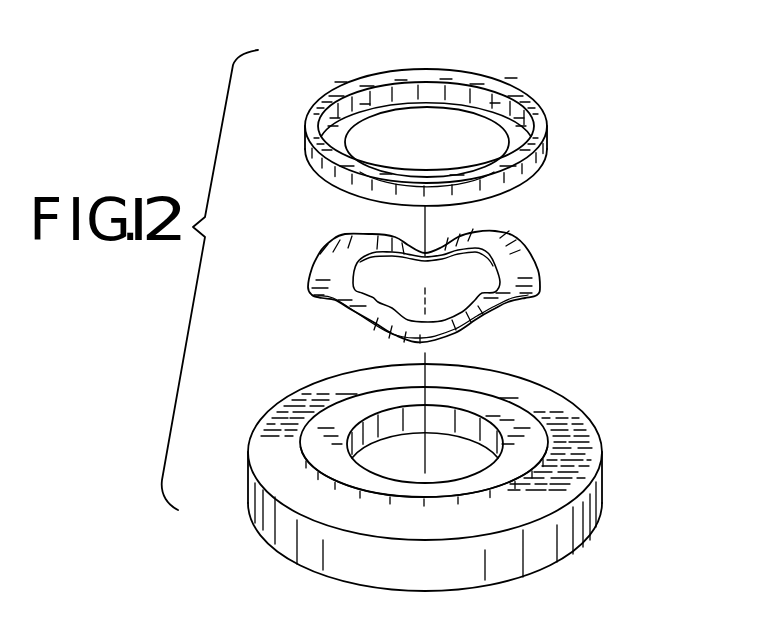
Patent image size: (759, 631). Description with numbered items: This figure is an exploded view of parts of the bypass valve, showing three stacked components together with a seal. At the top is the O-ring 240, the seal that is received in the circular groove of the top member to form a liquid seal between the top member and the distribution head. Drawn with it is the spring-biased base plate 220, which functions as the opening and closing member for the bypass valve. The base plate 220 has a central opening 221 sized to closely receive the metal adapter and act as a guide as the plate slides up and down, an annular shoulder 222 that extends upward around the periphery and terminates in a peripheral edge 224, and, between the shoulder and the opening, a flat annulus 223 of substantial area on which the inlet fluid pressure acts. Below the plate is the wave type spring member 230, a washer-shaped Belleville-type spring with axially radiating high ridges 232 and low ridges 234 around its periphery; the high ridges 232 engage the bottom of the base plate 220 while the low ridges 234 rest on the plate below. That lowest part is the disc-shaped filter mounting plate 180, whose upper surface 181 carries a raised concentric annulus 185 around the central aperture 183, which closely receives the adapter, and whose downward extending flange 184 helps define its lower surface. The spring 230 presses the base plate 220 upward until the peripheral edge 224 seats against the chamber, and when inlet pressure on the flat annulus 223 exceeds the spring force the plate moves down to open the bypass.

The disc-shaped filter mounting plate 180 is at (479, 466).
The upper surface 181 is at (565, 418).
The central aperture 183 is at (452, 422).
The downward extending flange 184 is at (560, 535).
The raised concentric annulus 185 is at (345, 466).
The spring-biased base plate 220 is at (456, 109).
The central opening 221 is at (478, 126).
The annular shoulder 222 is at (480, 77).
The flat annulus 223 is at (333, 143).
The peripheral edge 224 is at (444, 82).
The O-ring 240 is at (537, 123).
The wave type spring member 230 is at (457, 278).
The high ridges 232 is at (350, 251).
The low ridges 234 is at (540, 289).